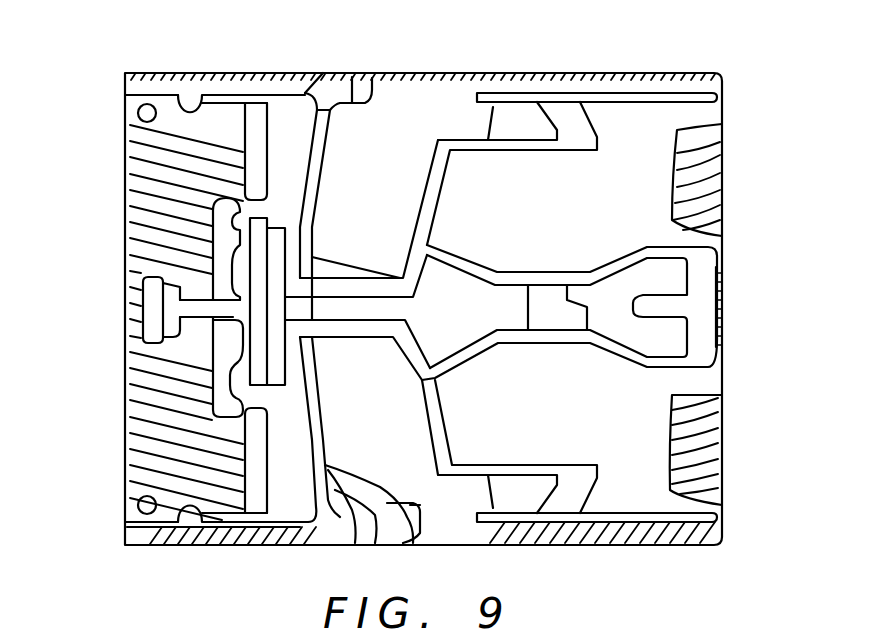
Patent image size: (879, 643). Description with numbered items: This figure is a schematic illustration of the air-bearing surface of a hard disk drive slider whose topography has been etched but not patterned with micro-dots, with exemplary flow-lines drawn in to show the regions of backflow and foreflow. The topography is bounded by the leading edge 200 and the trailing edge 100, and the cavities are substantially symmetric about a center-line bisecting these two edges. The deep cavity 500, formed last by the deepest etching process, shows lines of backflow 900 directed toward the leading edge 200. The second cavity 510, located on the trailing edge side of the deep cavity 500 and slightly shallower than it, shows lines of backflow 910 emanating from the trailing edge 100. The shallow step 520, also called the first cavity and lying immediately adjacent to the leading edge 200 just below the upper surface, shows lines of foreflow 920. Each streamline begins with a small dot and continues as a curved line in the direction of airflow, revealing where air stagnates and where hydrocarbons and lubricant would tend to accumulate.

The trailing edge 100 is at (128, 415).
The leading edge 200 is at (725, 256).
The deep cavity 500 is at (397, 107).
The second cavity 510 is at (630, 123).
The shallow step 520 is at (219, 123).
The lines of backflow 900 is at (405, 545).
The lines of backflow 910 is at (718, 179).
The lines of foreflow 920 is at (128, 183).